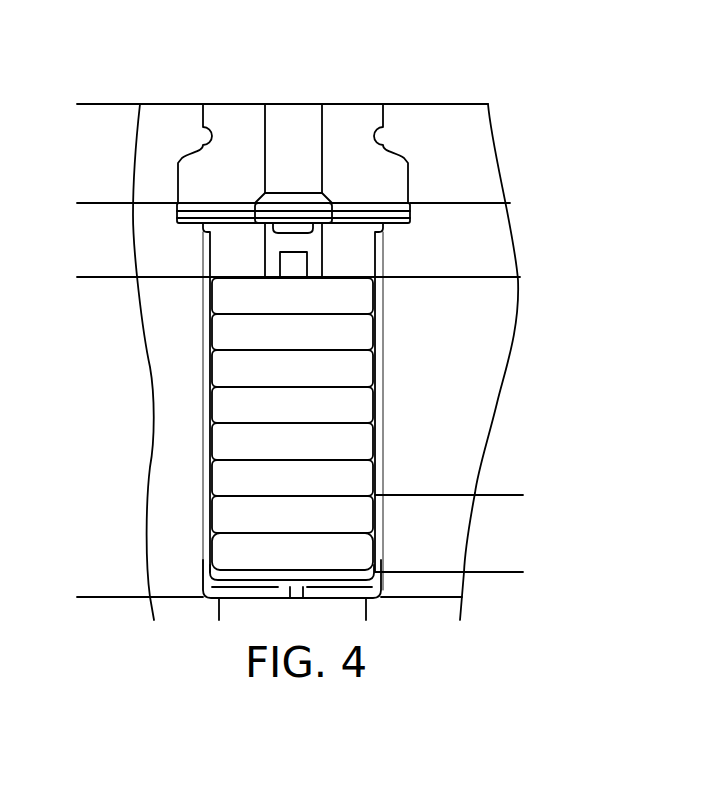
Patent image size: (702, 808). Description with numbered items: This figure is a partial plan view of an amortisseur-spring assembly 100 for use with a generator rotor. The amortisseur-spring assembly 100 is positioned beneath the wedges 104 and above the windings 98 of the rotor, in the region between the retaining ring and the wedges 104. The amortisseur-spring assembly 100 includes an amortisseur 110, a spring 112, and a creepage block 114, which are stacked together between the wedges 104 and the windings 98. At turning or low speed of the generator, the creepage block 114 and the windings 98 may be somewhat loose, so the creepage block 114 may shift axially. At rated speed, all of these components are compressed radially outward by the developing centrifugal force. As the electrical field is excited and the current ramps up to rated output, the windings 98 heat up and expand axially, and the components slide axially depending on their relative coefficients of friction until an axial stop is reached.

The amortisseur-spring assembly 100 is at (116, 78).
The wedges 104 is at (348, 104).
The amortisseur 110 is at (416, 203).
The spring 112 is at (350, 224).
The creepage block 114 is at (371, 257).
The windings 98 is at (340, 330).